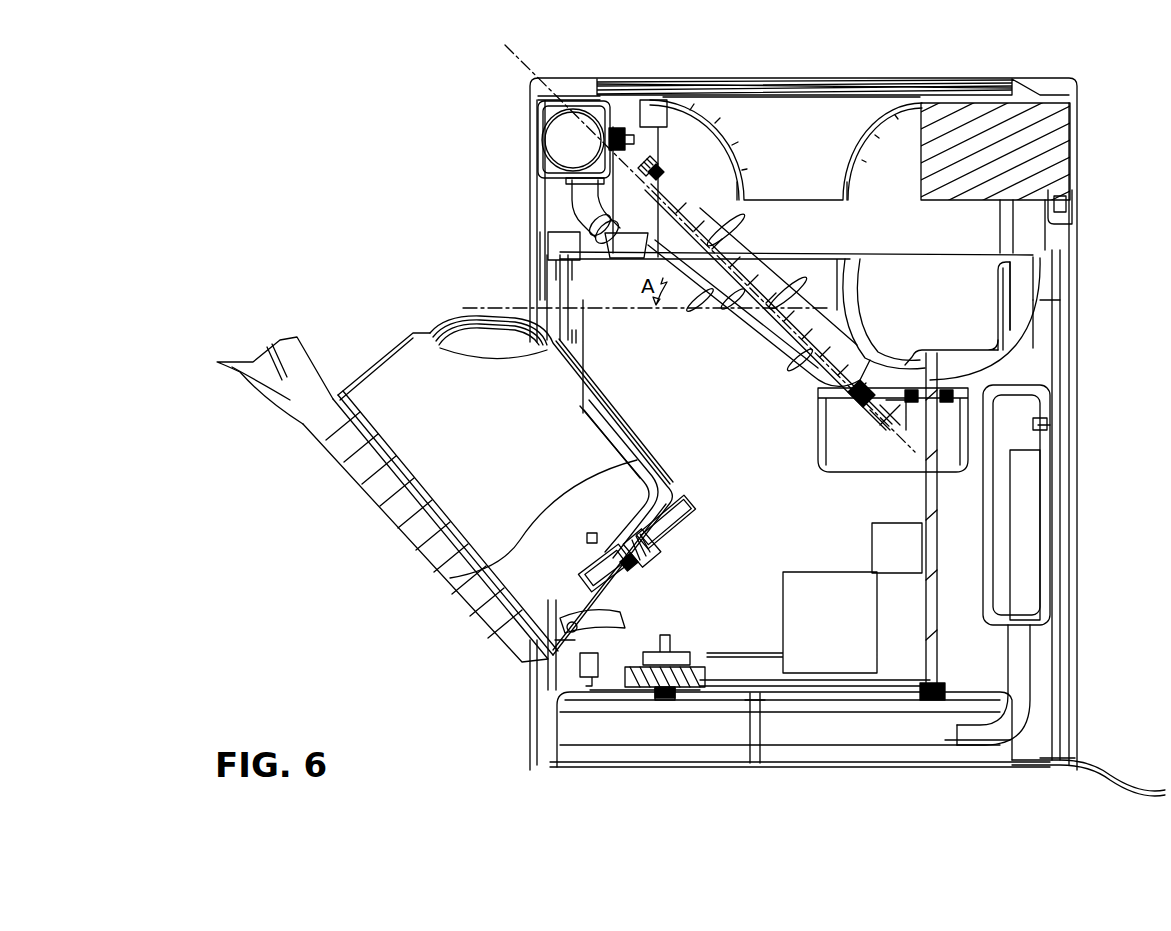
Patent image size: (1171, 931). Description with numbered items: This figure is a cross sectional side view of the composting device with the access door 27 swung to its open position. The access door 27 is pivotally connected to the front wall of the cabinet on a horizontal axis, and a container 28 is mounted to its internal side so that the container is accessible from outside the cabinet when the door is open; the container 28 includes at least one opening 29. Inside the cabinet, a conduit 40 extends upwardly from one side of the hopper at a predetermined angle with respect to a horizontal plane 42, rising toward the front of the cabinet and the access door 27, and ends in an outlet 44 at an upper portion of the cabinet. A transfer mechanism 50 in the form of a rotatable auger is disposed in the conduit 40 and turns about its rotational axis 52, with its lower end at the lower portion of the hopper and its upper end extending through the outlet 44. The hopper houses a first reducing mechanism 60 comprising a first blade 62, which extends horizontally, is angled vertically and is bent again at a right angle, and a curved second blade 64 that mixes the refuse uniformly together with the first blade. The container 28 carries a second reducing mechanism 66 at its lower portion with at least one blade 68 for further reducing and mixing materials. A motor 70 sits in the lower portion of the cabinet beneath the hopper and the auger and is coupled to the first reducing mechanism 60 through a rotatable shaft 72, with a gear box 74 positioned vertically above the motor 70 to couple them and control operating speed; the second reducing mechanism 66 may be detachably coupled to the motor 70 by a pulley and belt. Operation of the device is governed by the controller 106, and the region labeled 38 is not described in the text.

The access door 27 is at (282, 432).
The container 28 is at (383, 352).
The opening 29 is at (448, 426).
The chamber 38 is at (961, 308).
The conduit 40 is at (735, 343).
The horizontal plane 42 is at (498, 306).
The outlet 44 is at (665, 224).
The transfer mechanism 50 is at (572, 262).
The rotational axis 52 is at (528, 70).
The first reducing mechanism 60 is at (1008, 310).
The first blade 62 is at (1000, 328).
The second blade 64 is at (840, 295).
The second reducing mechanism 66 is at (594, 443).
The blade 68 is at (600, 588).
The motor 70 is at (900, 633).
The rotatable shaft 72 is at (925, 498).
The gear box 74 is at (965, 485).
The controller 106 is at (1043, 142).